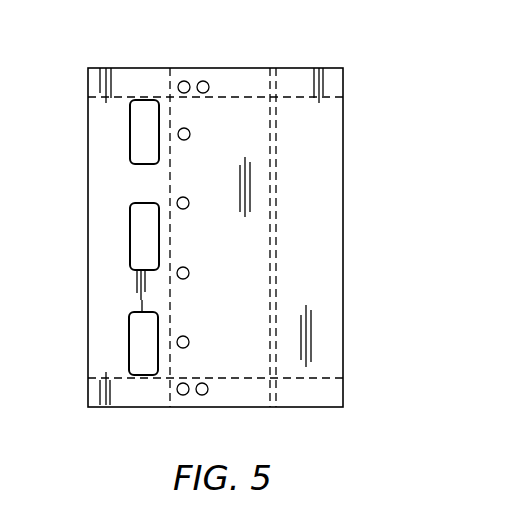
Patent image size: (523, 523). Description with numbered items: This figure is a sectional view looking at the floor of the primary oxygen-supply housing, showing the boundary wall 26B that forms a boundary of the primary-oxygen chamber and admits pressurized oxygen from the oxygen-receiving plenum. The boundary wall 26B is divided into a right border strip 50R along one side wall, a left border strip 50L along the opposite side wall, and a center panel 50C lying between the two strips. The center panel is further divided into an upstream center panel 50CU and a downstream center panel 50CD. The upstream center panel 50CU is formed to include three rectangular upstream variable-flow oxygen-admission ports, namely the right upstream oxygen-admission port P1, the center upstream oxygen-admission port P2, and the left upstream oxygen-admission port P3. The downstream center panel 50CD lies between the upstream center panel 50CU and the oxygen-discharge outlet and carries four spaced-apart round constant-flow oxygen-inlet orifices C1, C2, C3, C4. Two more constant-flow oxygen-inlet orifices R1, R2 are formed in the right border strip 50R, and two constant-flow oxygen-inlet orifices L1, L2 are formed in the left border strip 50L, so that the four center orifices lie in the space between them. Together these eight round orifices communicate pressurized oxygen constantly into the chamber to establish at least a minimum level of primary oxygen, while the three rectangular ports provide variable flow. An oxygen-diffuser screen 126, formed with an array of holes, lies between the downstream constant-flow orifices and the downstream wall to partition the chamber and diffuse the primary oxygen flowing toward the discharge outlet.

The center panel 50C is at (357, 186).
The left border strip 50L is at (357, 85).
The right border strip 50R is at (357, 394).
The boundary wall 26B is at (294, 57).
The upstream center panel 50CU is at (156, 186).
The downstream center panel 50CD is at (319, 166).
The oxygen-diffuser screen 126 is at (292, 267).
The left upstream oxygen-admission port P3 is at (130, 135).
The center upstream oxygen-admission port P2 is at (130, 243).
The right upstream oxygen-admission port P1 is at (129, 335).
The constant-flow oxygen-inlet orifice L1 is at (182, 81).
The constant-flow oxygen-inlet orifice L2 is at (205, 81).
The constant-flow oxygen-inlet orifice C4 is at (190, 134).
The constant-flow oxygen-inlet orifice C3 is at (189, 205).
The constant-flow oxygen-inlet orifice C2 is at (189, 273).
The constant-flow oxygen-inlet orifice C1 is at (189, 341).
The constant-flow oxygen-inlet orifice R1 is at (183, 395).
The constant-flow oxygen-inlet orifice R2 is at (202, 395).